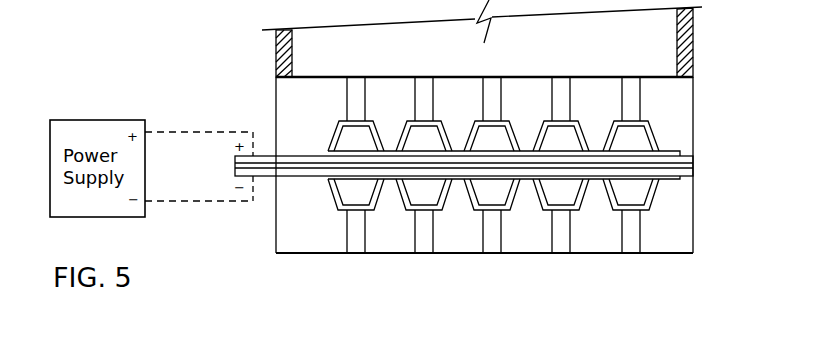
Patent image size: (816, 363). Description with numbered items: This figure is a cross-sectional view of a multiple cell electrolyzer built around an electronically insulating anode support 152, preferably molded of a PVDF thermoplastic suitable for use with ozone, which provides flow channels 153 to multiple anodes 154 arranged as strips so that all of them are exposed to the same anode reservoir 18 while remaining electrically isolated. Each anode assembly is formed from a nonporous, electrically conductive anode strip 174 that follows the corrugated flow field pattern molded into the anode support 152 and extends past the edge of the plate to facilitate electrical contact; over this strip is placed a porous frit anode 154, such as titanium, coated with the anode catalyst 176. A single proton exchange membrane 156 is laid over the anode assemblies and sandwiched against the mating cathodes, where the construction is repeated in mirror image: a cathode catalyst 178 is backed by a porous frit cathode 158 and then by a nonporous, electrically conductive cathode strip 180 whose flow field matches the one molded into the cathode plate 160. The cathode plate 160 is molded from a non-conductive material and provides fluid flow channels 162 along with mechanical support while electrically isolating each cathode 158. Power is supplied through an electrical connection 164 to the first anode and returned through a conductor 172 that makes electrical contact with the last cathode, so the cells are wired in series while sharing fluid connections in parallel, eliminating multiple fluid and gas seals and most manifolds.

The anode reservoir 18 is at (695, 43).
The anode support 152 is at (695, 98).
The flow channels 153 is at (498, 90).
The anode 154 is at (352, 156).
The proton exchange membrane 156 is at (694, 161).
The cathode 158 is at (389, 180).
The cathode plate 160 is at (695, 229).
The fluid flow channels 162 is at (565, 233).
The electrical connection 164 is at (179, 130).
The conductor 172 is at (185, 203).
The anode strip 174 is at (264, 150).
The anode catalyst 176 is at (422, 156).
The cathode catalyst 178 is at (458, 168).
The cathode strip 180 is at (268, 190).